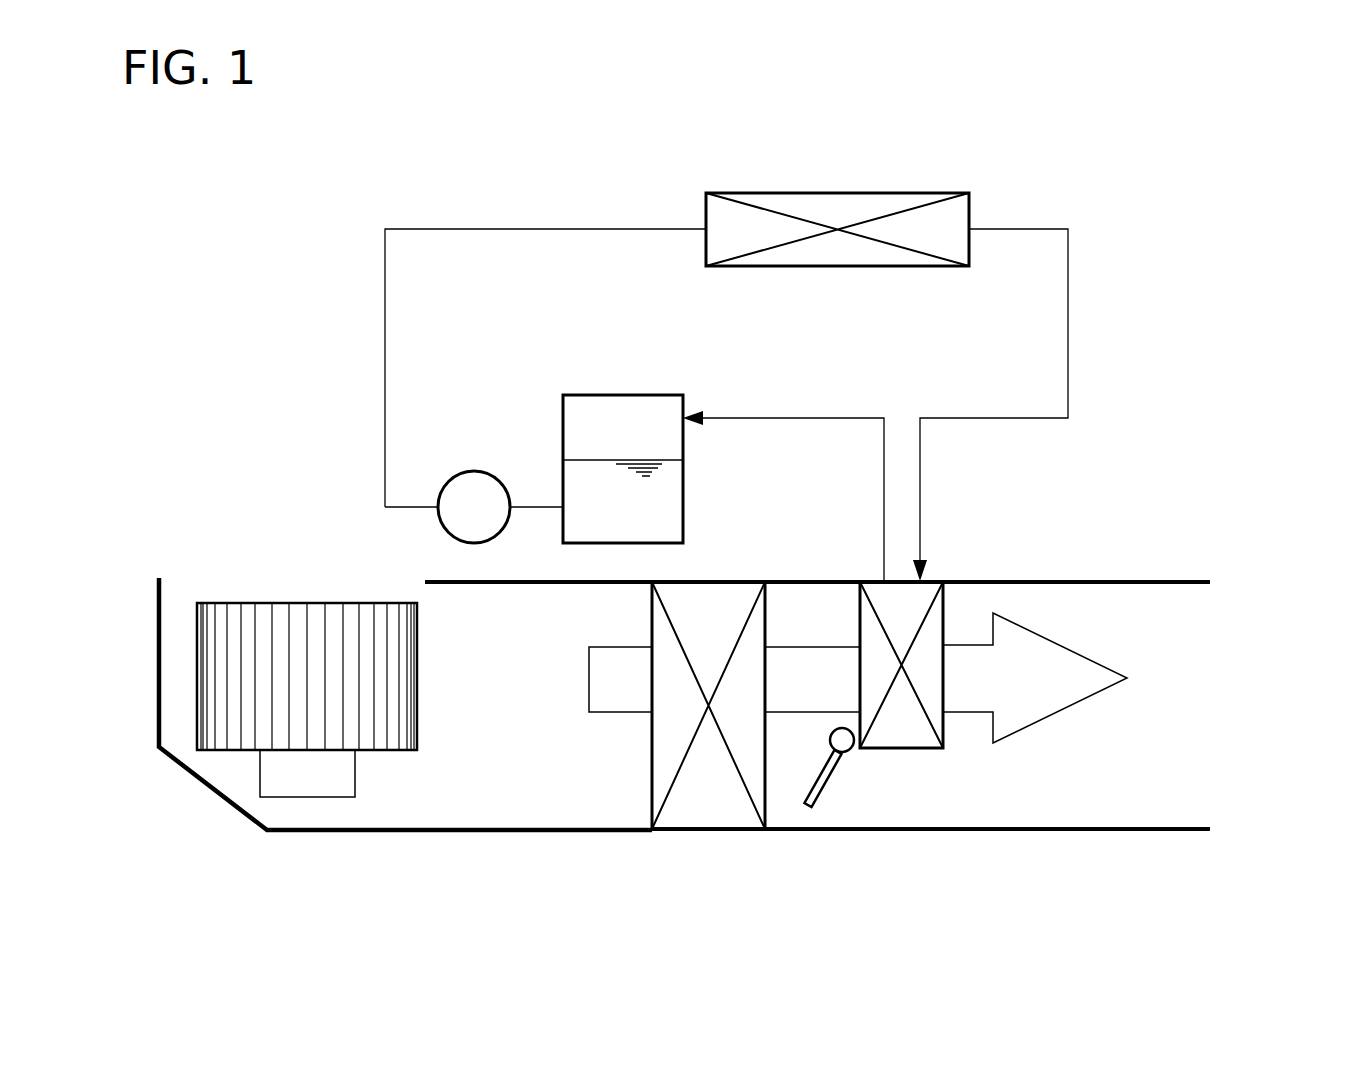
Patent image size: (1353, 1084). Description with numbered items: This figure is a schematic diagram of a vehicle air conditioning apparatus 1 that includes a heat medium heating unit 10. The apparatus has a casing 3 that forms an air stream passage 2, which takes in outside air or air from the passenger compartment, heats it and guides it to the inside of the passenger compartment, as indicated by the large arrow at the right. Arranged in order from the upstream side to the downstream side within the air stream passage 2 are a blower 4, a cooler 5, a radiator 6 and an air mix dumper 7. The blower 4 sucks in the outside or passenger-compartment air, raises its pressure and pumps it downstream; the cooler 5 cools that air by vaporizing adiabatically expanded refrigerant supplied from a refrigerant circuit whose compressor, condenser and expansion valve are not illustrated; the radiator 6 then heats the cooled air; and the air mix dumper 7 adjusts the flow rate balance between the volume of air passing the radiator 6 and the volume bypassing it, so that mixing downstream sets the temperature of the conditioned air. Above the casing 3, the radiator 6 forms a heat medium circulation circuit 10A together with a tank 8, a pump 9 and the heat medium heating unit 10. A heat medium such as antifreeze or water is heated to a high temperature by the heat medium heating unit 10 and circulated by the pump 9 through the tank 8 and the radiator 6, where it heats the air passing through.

The vehicle air conditioning apparatus 1 is at (606, 848).
The air stream passage 2 is at (474, 786).
The casing 3 is at (1048, 831).
The blower 4 is at (266, 603).
The cooler 5 is at (715, 808).
The radiator 6 is at (913, 750).
The air mix dumper 7 is at (828, 788).
The tank 8 is at (618, 395).
The pump 9 is at (474, 472).
The heat medium heating unit 10 is at (856, 193).
The heat medium circulation circuit 10A is at (496, 215).